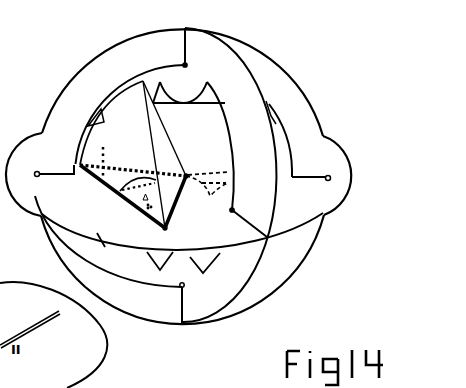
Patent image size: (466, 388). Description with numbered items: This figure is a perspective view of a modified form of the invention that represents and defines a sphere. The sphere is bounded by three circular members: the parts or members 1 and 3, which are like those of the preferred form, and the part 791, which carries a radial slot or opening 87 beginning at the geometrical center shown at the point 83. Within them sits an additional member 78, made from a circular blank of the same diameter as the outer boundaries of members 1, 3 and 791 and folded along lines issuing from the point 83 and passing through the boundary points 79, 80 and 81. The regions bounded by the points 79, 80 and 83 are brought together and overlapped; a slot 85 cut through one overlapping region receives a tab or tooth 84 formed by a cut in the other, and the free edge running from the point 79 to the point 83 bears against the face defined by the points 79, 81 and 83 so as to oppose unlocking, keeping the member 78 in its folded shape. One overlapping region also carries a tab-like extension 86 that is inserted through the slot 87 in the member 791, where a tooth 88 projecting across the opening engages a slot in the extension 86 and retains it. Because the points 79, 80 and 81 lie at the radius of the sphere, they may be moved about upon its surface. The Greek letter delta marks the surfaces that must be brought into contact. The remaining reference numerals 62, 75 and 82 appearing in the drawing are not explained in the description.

The part or member 1 is at (241, 80).
The part or member 3 is at (303, 118).
The rod 62 is at (63, 318).
The housing 75 is at (81, 367).
The member or part 78 is at (172, 146).
The point 79 is at (78, 163).
The point 80 is at (169, 228).
The point 81 is at (140, 79).
The bottom edge 82 is at (163, 231).
The point 83 is at (188, 174).
The tab or tooth 84 is at (118, 188).
The incision, cut or slot 85 is at (134, 193).
The extended part or portion 86 is at (207, 184).
The slot or opening 87 is at (208, 199).
The tooth or tab 88 is at (208, 178).
The part or member 791 is at (302, 206).